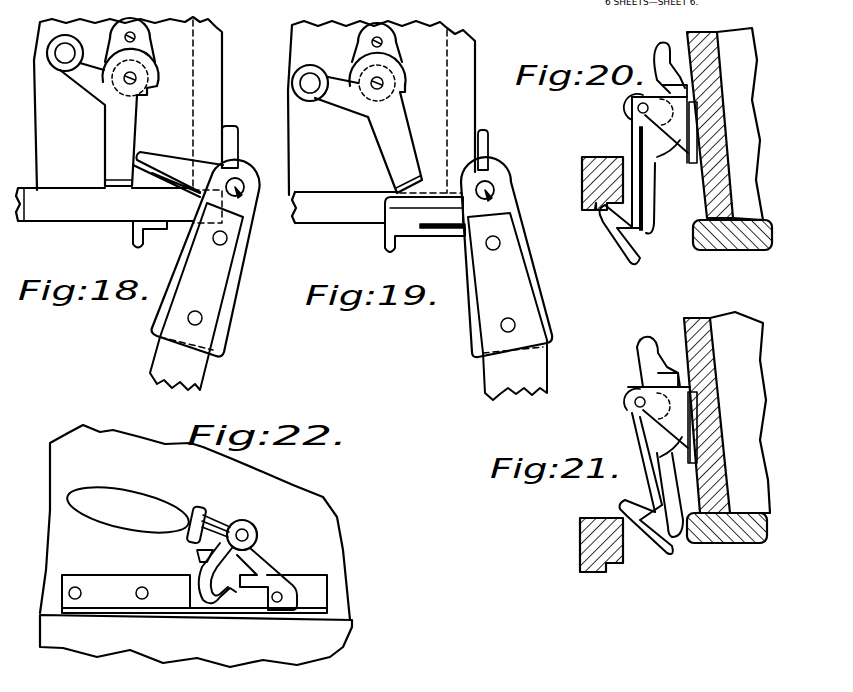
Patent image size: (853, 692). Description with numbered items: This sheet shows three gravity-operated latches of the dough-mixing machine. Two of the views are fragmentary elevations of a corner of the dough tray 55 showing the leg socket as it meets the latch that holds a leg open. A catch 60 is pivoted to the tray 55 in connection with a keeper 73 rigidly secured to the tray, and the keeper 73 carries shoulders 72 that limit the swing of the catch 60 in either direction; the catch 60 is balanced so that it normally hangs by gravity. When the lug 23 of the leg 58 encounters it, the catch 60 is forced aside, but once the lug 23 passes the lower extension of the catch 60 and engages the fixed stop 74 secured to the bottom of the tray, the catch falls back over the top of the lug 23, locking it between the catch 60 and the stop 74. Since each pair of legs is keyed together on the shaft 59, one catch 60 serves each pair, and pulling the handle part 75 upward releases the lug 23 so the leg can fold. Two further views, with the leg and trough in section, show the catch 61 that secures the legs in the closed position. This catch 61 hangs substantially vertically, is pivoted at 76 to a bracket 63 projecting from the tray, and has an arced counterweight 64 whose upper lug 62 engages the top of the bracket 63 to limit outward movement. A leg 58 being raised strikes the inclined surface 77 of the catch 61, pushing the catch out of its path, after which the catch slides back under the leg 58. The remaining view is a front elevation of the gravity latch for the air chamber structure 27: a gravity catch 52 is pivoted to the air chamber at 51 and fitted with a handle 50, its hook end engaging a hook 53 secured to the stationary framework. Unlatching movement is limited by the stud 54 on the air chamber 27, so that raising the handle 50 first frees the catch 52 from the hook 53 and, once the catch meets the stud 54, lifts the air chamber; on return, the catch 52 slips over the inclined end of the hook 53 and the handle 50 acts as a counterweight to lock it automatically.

In FIG. 18, the lug 23 is at (152, 178).
In FIG. 19, the lug 23 is at (388, 226).
In FIG. 22, the air chamber structure 27 is at (196, 546).
In FIG. 22, the handle 50 is at (115, 497).
In FIG. 22, the pivot 51 is at (250, 533).
In FIG. 22, the gravity catch 52 is at (225, 610).
In FIG. 22, the hook 53 is at (262, 582).
In FIG. 22, the stud 54 is at (196, 556).
In FIG. 19, the tray 55 is at (480, 100).
In FIG. 20, the tray 55 is at (740, 92).
In FIG. 21, the tray 55 is at (727, 325).
In FIG. 20, the leg 58 is at (585, 179).
In FIG. 21, the leg 58 is at (587, 539).
In FIG. 18, the shaft 59 is at (236, 183).
In FIG. 19, the shaft 59 is at (488, 186).
In FIG. 18, the catch 60 is at (110, 135).
In FIG. 19, the catch 60 is at (385, 148).
In FIG. 20, the catch 61 is at (650, 224).
In FIG. 21, the catch 61 is at (664, 518).
In FIG. 20, the lug 62 is at (656, 78).
In FIG. 21, the lug 62 is at (667, 373).
In FIG. 20, the bracket 63 is at (636, 135).
In FIG. 21, the bracket 63 is at (637, 430).
In FIG. 20, the arced counterweight 64 is at (660, 148).
In FIG. 21, the arced counterweight 64 is at (653, 387).
In FIG. 18, the shoulders 72 is at (108, 70).
In FIG. 19, the shoulders 72 is at (357, 74).
In FIG. 18, the keeper 73 is at (142, 42).
In FIG. 19, the keeper 73 is at (364, 49).
In FIG. 18, the fixed stop 74 is at (137, 230).
In FIG. 19, the fixed stop 74 is at (406, 238).
In FIG. 18, the handle part 75 is at (61, 69).
In FIG. 19, the handle part 75 is at (309, 101).
In FIG. 20, the pivot 76 is at (637, 108).
In FIG. 21, the pivot 76 is at (636, 401).
In FIG. 20, the inclined surface 77 is at (620, 235).
In FIG. 21, the inclined surface 77 is at (637, 537).